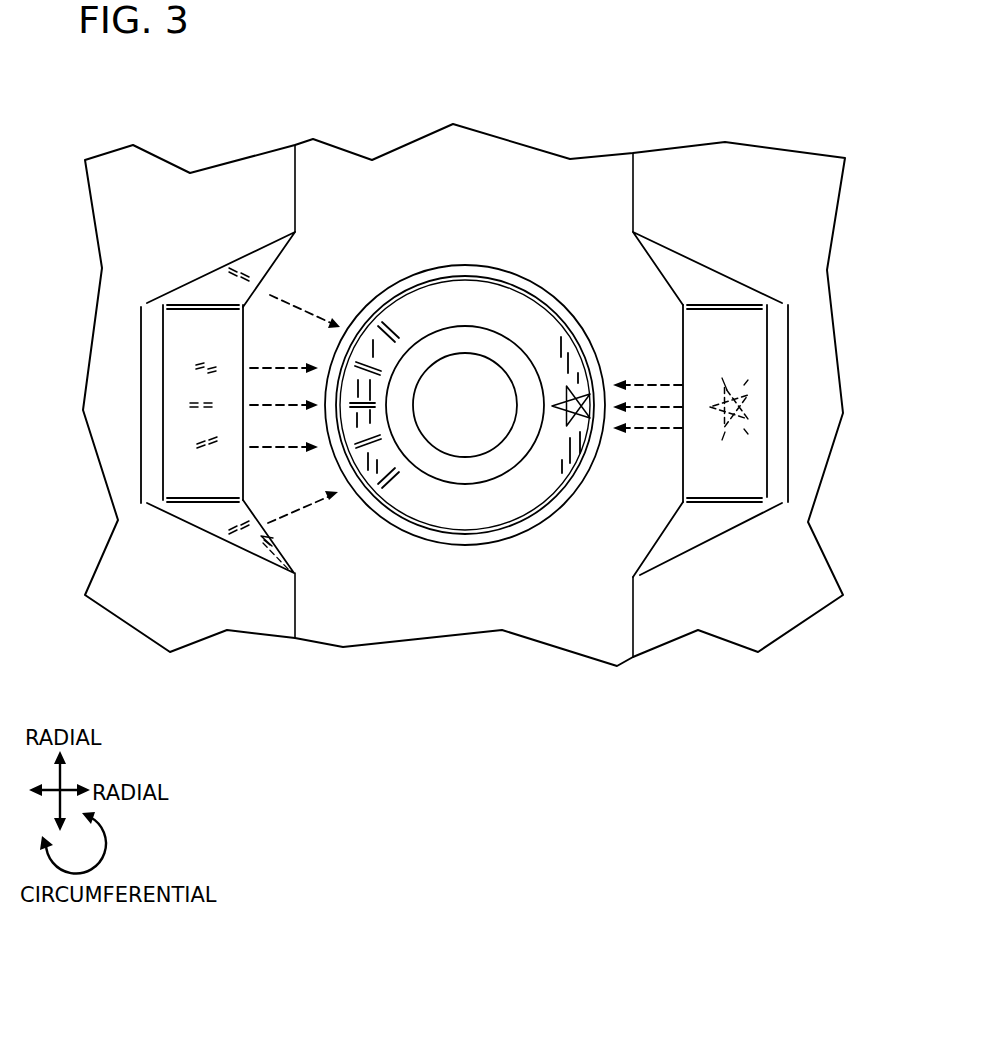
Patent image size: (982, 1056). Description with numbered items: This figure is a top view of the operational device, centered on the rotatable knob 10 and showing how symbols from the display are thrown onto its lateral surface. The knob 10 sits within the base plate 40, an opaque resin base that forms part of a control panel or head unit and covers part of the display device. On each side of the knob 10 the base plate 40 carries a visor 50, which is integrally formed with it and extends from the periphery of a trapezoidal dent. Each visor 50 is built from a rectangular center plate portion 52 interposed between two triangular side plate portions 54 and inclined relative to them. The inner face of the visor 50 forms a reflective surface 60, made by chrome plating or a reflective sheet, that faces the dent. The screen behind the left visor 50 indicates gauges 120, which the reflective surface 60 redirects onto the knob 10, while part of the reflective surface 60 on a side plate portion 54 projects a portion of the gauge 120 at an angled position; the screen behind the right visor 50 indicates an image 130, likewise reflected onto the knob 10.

The knob 10 is at (492, 254).
The base plate 40 is at (687, 144).
The visor 50 is at (722, 268).
The center plate portion 52 is at (180, 406).
The side plate portion 54 is at (212, 280).
The reflective surface 60 is at (268, 271).
The gauge 120 is at (268, 554).
The image 130 is at (718, 433).